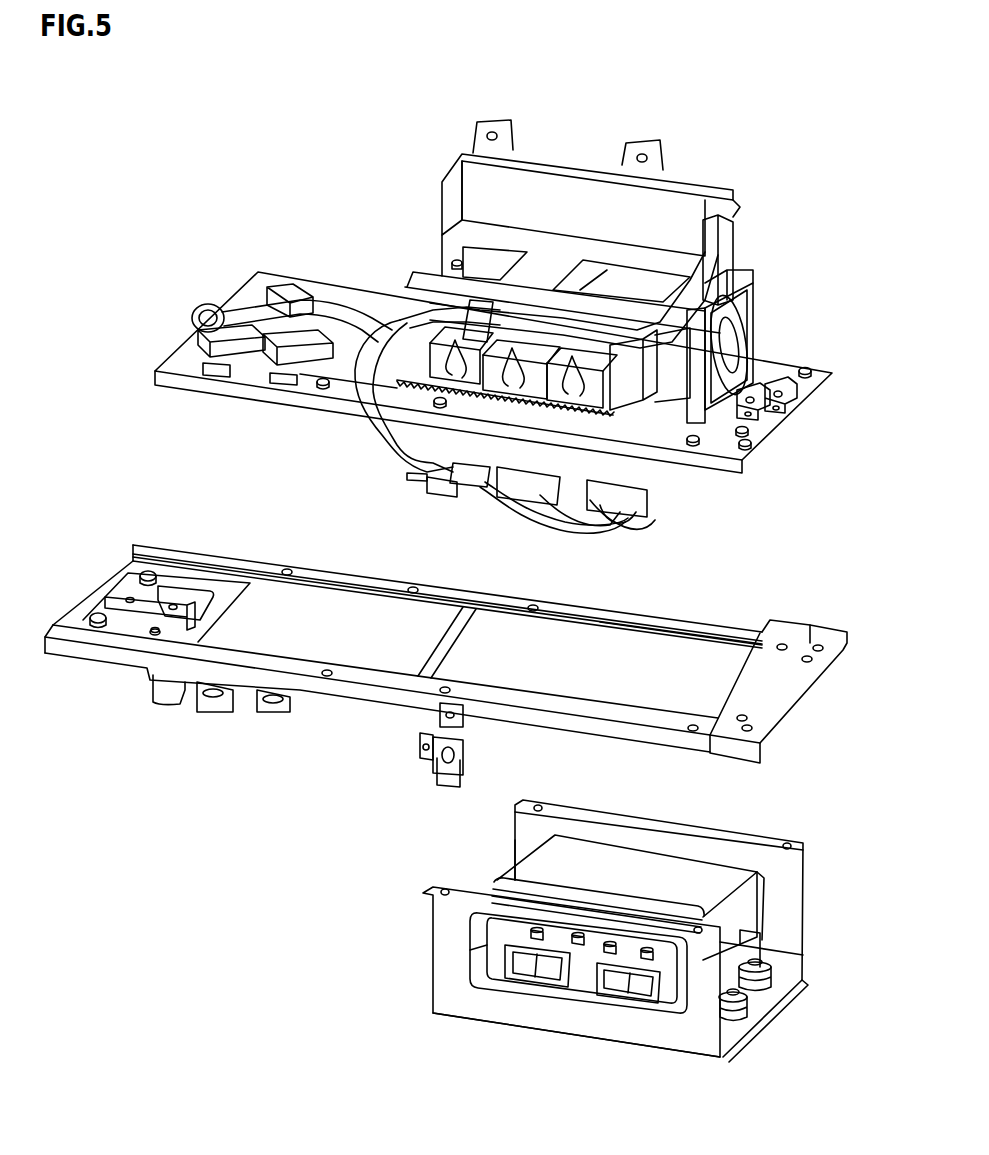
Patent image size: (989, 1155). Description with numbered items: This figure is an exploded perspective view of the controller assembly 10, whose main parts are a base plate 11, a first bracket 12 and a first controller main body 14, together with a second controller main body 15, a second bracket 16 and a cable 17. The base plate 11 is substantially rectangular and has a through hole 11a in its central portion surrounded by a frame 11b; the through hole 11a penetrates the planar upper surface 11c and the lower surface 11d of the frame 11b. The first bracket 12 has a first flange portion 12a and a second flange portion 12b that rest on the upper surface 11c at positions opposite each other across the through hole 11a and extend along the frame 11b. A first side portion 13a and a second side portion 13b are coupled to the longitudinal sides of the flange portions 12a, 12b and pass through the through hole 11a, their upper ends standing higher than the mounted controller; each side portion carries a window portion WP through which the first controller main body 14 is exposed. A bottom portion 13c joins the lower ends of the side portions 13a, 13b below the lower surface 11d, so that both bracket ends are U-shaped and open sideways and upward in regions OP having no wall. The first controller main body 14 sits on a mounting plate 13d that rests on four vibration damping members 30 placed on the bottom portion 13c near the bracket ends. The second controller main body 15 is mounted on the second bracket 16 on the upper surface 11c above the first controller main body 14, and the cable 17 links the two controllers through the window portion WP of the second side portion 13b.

The controller assembly 10 is at (757, 114).
The base plate 11 is at (218, 562).
The through hole 11a is at (665, 628).
The frame 11b is at (793, 675).
The upper surface 11c is at (580, 617).
The lower surface 11d is at (700, 645).
The first bracket 12 is at (702, 1013).
The first flange portion 12a is at (727, 840).
The second flange portion 12b is at (610, 917).
The first side portion 13a is at (772, 877).
The second side portion 13b is at (665, 1030).
The bottom portion 13c is at (793, 983).
The mounting plate 13d is at (783, 973).
The first controller main body 14 is at (675, 877).
The second controller main body 15 is at (620, 420).
The second bracket 16 is at (715, 437).
The cable 17 is at (397, 330).
The vibration damping member 30 is at (770, 1000).
The region OP is at (515, 842).
The window portion WP is at (767, 900).